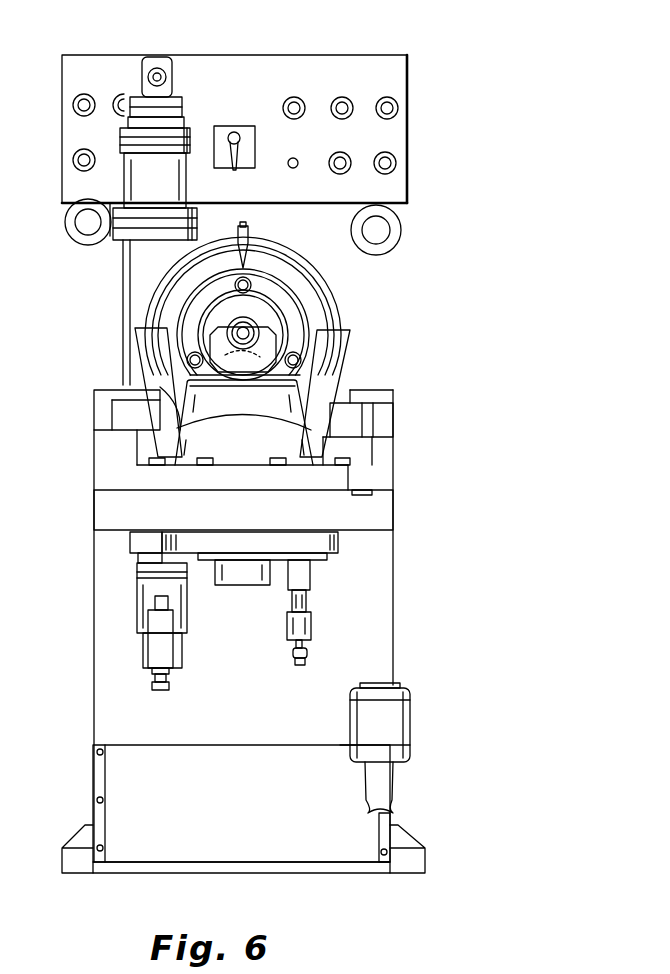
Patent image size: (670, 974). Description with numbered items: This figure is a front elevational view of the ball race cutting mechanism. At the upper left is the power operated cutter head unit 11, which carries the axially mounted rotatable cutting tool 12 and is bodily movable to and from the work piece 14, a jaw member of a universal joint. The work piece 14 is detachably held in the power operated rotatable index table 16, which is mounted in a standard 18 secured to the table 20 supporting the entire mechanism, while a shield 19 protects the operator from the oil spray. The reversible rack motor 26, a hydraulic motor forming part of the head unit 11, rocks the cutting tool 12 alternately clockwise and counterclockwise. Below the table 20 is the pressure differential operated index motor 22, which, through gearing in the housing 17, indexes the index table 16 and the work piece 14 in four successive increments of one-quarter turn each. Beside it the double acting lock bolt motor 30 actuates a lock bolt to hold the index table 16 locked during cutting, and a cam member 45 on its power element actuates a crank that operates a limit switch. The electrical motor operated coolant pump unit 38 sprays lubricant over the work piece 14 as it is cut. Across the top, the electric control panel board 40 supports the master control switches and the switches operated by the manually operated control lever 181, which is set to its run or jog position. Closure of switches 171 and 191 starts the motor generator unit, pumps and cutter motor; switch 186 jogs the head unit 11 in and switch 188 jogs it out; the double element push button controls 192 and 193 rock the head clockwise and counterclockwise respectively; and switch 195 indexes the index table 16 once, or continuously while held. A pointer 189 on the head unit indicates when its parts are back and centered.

The power operated cutter head unit 11 is at (120, 330).
The rotatable cutting tool 12 is at (262, 302).
The work piece 14 is at (262, 345).
The rotatable index table 16 is at (303, 382).
The housing 17 is at (152, 547).
The standard 18 is at (345, 412).
The shield 19 is at (342, 340).
The table 20 is at (382, 507).
The pressure differential operated motor 22 is at (145, 610).
The rack motor 26 is at (140, 198).
The double acting motor 30 is at (302, 598).
The coolant pump unit 38 is at (388, 718).
The electric control panel board 40 is at (398, 84).
The cam member 45 is at (310, 653).
The switch 171 is at (76, 101).
The control lever 181 is at (236, 165).
The switch 186 is at (338, 97).
The switch 188 is at (338, 168).
The pointer 189 is at (253, 232).
The switch 191 is at (118, 99).
The double element push button control 192 is at (398, 108).
The double element push button control 193 is at (398, 163).
The switch 195 is at (293, 98).